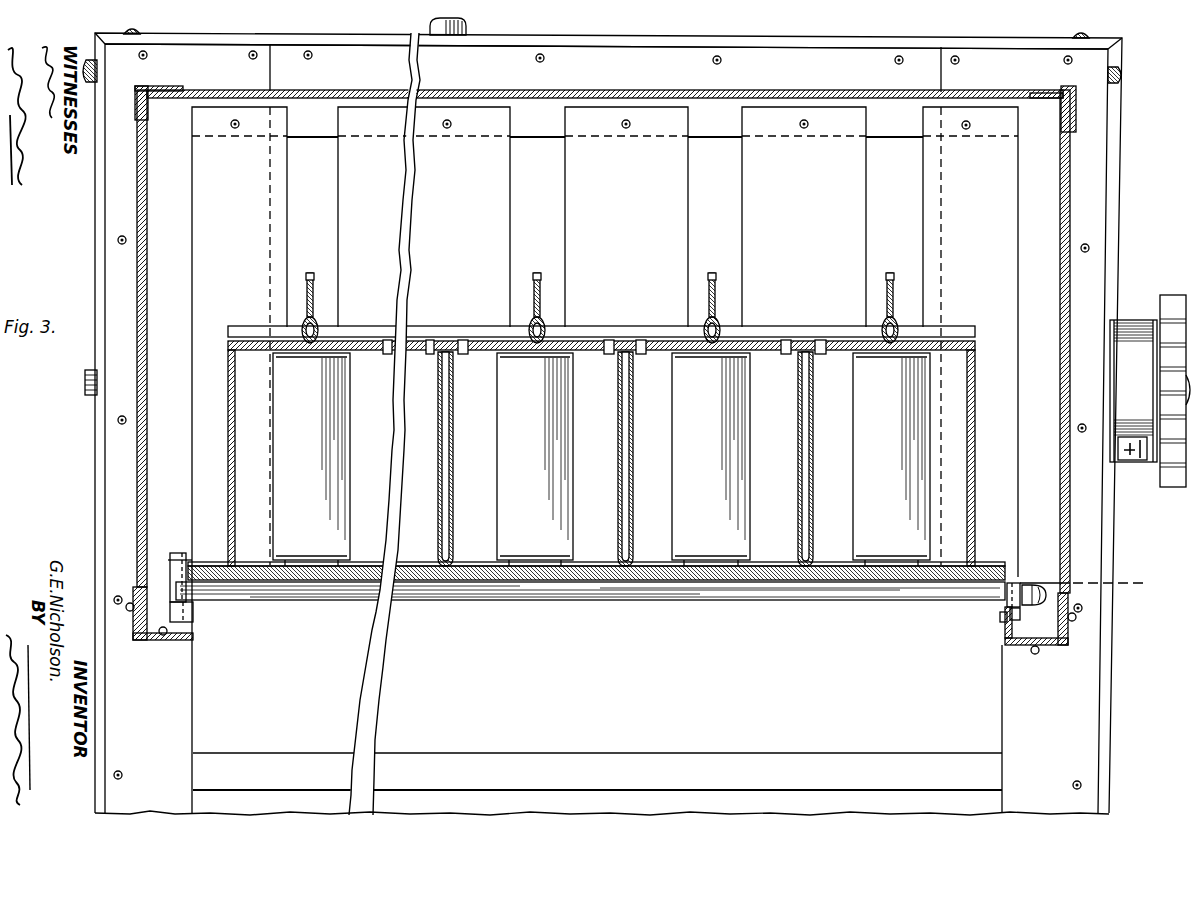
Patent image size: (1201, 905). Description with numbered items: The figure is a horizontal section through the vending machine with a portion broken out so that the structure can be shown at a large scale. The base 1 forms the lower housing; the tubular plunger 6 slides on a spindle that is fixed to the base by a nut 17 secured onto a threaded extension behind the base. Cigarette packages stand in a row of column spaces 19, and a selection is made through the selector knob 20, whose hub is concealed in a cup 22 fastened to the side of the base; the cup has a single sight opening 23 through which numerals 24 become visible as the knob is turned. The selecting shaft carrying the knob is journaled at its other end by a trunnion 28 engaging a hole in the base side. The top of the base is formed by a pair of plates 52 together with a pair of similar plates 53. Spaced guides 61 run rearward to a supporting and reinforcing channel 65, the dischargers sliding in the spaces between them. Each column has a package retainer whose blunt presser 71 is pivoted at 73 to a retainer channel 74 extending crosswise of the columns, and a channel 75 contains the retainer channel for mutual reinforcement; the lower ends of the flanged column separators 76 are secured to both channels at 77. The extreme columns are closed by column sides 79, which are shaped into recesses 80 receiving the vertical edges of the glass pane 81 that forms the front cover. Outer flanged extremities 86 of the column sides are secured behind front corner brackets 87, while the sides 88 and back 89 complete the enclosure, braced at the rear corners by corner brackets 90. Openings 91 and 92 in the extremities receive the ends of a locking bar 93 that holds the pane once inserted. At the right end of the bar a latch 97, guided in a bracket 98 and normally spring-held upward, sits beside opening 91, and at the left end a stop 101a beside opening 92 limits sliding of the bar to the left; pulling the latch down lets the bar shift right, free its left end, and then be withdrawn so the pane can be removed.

The base 1 is at (95, 238).
The tubular plunger 6 is at (930, 628).
The nut 17 is at (466, 28).
The column space 19 is at (246, 446).
The selector knob 20 is at (1190, 296).
The cup 22 is at (1132, 320).
The sight opening 23 is at (1130, 443).
The numerals 24 is at (1128, 462).
The trunnion 28 is at (84, 384).
The plates 52 is at (118, 467).
The plates 53 is at (647, 32).
The guides 61 is at (492, 231).
The supporting and reinforcing channel 65 is at (548, 126).
The presser 71 is at (316, 282).
The pivot 73 is at (318, 320).
The retainer channel 74 is at (590, 343).
The channel 75 is at (262, 347).
The column separators 76 is at (454, 532).
The securing points 77 is at (461, 355).
The column sides 79 is at (228, 500).
The recesses 80 is at (198, 562).
The glass pane 81 is at (340, 580).
The outer flanged extremities 86 is at (192, 626).
The front corner brackets 87 is at (140, 645).
The sides 88 is at (140, 300).
The back 89 is at (326, 91).
The corner brackets 90 is at (140, 90).
The opening 91 is at (1000, 617).
The opening 92 is at (197, 607).
The locking bar 93 is at (472, 596).
The latch 97 is at (1031, 585).
The bracket 98 is at (1028, 622).
The stop 101a is at (180, 566).